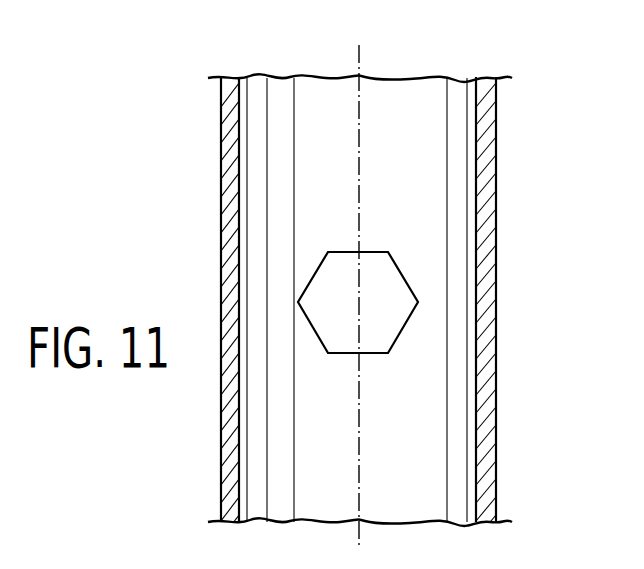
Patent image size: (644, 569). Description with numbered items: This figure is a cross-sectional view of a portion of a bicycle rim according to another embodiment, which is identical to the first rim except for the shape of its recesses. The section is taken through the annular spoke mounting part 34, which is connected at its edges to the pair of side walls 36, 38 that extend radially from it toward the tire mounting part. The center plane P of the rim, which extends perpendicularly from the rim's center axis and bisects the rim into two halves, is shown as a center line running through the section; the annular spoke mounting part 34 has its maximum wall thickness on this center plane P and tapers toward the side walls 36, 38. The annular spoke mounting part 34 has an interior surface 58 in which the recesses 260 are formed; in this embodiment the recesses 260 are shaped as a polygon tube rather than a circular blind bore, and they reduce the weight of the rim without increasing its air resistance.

The annular spoke mounting part 34 is at (447, 268).
The side wall 36 is at (219, 192).
The side wall 38 is at (497, 195).
The interior surface 58 is at (315, 155).
The recesses 260 is at (373, 273).
The center plane P is at (360, 62).